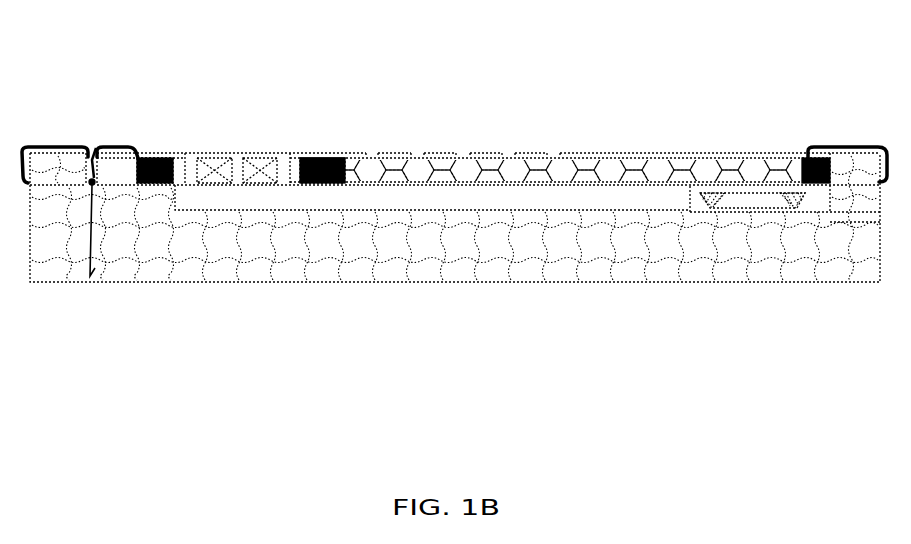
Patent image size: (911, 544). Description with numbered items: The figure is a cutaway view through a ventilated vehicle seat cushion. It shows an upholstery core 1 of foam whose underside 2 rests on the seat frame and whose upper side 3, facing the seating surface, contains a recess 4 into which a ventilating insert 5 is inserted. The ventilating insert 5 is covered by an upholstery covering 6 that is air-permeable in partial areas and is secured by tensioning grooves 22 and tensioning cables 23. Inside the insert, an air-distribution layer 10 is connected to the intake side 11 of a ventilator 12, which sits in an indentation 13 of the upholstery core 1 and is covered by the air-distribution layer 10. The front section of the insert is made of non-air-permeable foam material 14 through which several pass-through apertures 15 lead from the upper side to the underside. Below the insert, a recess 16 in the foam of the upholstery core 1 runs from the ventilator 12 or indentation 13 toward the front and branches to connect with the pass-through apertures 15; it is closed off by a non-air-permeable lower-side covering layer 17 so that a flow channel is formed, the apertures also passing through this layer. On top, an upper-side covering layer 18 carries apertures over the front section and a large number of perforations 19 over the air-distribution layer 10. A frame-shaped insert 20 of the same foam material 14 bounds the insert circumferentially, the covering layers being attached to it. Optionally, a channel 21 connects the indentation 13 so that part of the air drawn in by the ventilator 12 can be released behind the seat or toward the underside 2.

The upholstery core 1 is at (152, 272).
The underside 2 is at (278, 282).
The upper side 3 is at (120, 158).
The recess 4 is at (690, 212).
The ventilating insert 5 is at (478, 150).
The upholstery covering 6 is at (72, 150).
The air-distribution layer 10 is at (718, 160).
The intake side 11 is at (755, 192).
The ventilator 12 is at (738, 202).
The indentation 13 is at (813, 207).
The non-air-permeable foam material 14 is at (190, 160).
The pass-through apertures 15 is at (272, 158).
The recess 16 is at (227, 210).
The lower-side covering layer 17 is at (152, 185).
The upper-side covering layer 18 is at (355, 152).
The perforations 19 is at (374, 152).
The frame-shaped insert 20 is at (152, 158).
The channel 21 is at (845, 220).
The tensioning grooves 22 is at (95, 150).
The tensioning cables 23 is at (96, 283).